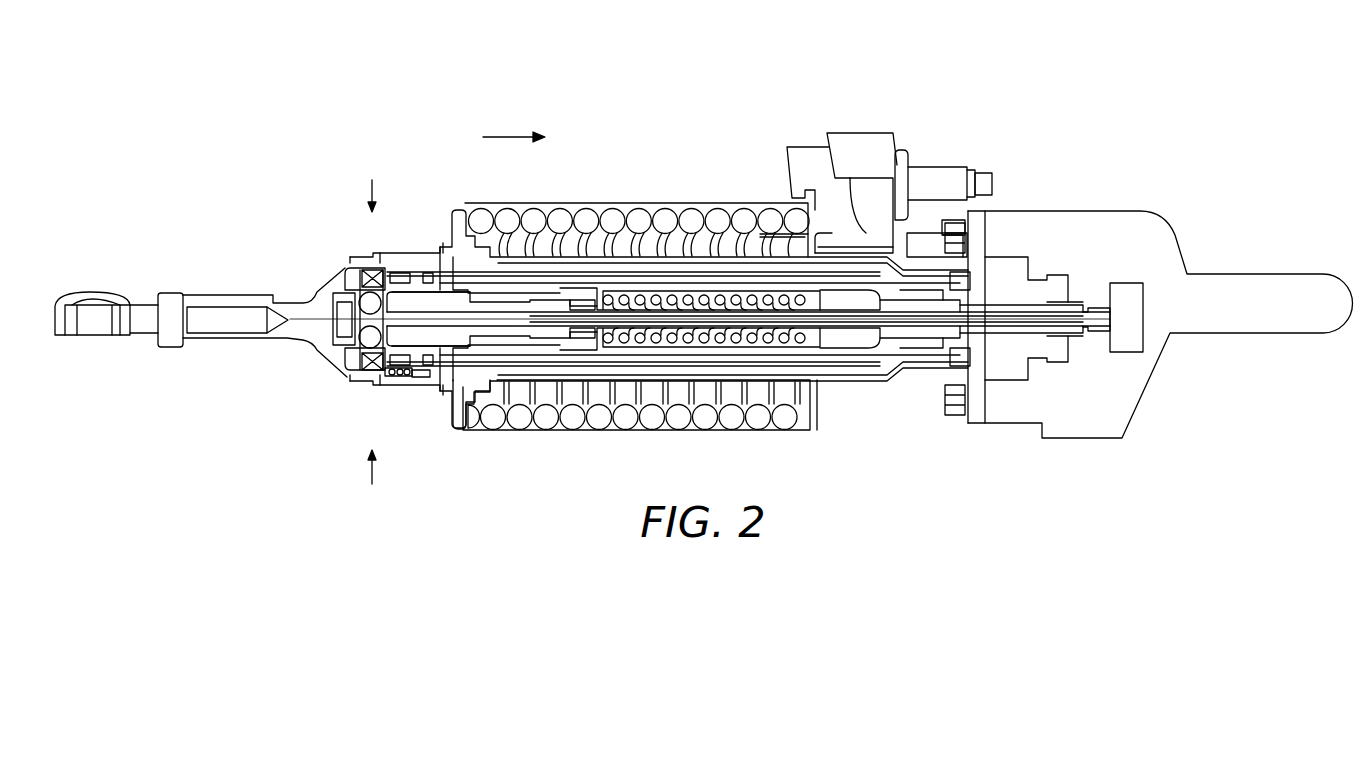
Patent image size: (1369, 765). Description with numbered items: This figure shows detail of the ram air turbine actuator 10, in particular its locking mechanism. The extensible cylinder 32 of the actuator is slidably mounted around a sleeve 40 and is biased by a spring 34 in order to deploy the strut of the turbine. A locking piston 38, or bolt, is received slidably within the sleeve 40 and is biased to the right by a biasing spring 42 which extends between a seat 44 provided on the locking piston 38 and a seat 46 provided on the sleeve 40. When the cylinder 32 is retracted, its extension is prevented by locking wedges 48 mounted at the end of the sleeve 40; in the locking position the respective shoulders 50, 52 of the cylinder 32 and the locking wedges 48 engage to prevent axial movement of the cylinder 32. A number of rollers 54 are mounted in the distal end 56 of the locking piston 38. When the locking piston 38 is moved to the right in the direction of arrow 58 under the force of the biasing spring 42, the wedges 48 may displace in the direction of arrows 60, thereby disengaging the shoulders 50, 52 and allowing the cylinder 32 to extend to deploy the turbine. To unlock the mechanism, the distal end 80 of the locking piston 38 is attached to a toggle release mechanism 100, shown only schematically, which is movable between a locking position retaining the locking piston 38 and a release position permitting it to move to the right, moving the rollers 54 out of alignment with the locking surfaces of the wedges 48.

The actuator assembly 10 is at (650, 160).
The cylinder 32 is at (465, 252).
The spring 34 is at (536, 214).
The locking piston 38 is at (913, 323).
The sleeve 40 is at (588, 285).
The biasing spring 42 is at (740, 345).
The seat 44 is at (807, 347).
The seat 46 is at (620, 295).
The locking wedges 48 is at (371, 267).
The shoulder 50 is at (390, 376).
The shoulder 52 is at (395, 377).
The rollers 54 is at (347, 278).
The distal end 56 is at (313, 343).
The arrow 58 is at (510, 135).
The arrows 60 is at (372, 331).
The distal end 80 is at (1102, 307).
The toggle release mechanism 100 is at (1147, 302).